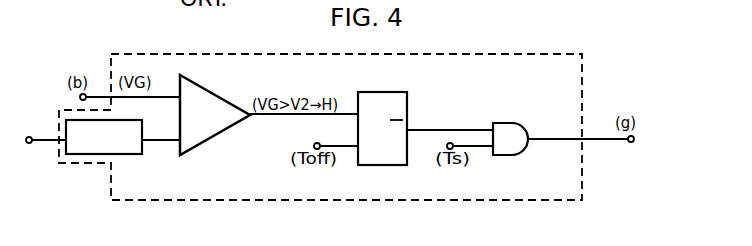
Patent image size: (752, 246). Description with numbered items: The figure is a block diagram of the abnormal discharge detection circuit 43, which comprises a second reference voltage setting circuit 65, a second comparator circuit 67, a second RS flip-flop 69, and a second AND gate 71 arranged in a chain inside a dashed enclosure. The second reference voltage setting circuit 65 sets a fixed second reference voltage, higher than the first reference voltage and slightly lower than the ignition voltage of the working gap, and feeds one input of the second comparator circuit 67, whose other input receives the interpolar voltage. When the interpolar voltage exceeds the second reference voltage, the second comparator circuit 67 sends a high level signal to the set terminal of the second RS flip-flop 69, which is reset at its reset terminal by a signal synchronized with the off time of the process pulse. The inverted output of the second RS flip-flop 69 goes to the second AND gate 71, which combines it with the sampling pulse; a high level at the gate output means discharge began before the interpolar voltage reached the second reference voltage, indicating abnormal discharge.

The abnormal discharge detection circuit 43 is at (582, 78).
The second reference voltage setting circuit 65 is at (96, 154).
The second comparator circuit 67 is at (213, 137).
The second RS flip-flop 69 is at (410, 160).
The second AND gate 71 is at (529, 157).